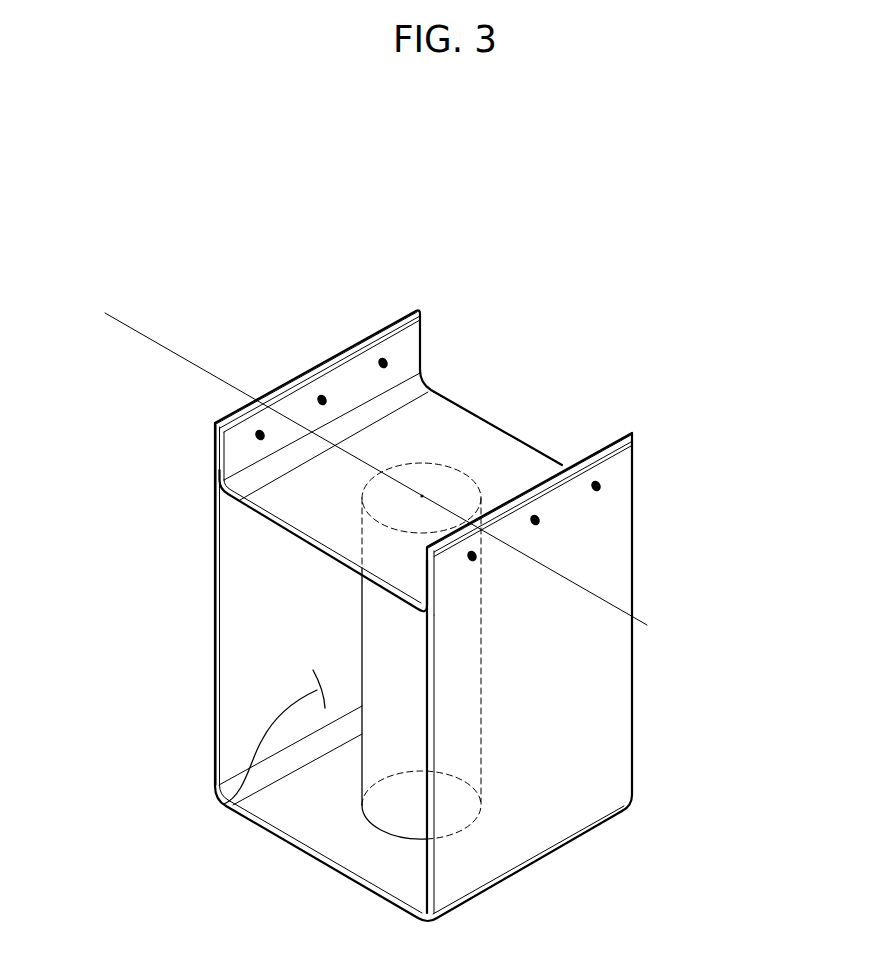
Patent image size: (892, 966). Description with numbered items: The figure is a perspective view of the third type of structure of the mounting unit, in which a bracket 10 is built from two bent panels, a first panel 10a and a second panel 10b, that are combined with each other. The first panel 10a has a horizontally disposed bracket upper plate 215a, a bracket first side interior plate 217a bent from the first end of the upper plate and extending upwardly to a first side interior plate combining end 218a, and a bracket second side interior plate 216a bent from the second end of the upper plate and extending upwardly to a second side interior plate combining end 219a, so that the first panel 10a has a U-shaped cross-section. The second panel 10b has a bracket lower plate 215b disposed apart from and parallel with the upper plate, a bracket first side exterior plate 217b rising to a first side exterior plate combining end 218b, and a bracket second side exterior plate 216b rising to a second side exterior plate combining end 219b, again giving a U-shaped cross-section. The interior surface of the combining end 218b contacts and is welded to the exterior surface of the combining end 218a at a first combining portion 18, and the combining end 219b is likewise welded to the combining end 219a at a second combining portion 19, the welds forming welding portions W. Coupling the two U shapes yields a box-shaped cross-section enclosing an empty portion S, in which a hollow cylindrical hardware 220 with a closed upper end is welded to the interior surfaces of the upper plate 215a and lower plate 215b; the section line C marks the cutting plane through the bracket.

The bracket 10 is at (632, 313).
The first panel 10a is at (478, 396).
The second panel 10b is at (555, 871).
The first combining portion 18 is at (733, 392).
The second combining portion 19 is at (285, 313).
The bracket upper plate 215a is at (505, 456).
The bracket lower plate 215b is at (372, 863).
The bracket second side interior plate 216a is at (410, 348).
The bracket second side exterior plate 216b is at (215, 687).
The bracket first side interior plate 217a is at (427, 571).
The bracket first side exterior plate 217b is at (605, 715).
The first side interior plate combining end 218a is at (592, 443).
The first side exterior plate combining end 218b is at (613, 468).
The second side interior plate combining end 219a is at (282, 428).
The second side exterior plate combining end 219b is at (215, 457).
The hardware 220 is at (383, 742).
The welding portion W is at (322, 400).
The empty portion S is at (218, 802).
The section line C- C is at (105, 313).